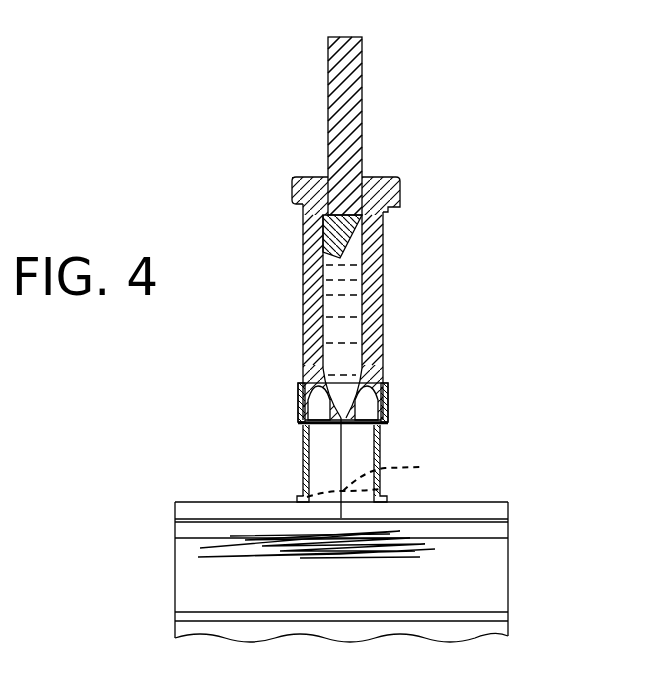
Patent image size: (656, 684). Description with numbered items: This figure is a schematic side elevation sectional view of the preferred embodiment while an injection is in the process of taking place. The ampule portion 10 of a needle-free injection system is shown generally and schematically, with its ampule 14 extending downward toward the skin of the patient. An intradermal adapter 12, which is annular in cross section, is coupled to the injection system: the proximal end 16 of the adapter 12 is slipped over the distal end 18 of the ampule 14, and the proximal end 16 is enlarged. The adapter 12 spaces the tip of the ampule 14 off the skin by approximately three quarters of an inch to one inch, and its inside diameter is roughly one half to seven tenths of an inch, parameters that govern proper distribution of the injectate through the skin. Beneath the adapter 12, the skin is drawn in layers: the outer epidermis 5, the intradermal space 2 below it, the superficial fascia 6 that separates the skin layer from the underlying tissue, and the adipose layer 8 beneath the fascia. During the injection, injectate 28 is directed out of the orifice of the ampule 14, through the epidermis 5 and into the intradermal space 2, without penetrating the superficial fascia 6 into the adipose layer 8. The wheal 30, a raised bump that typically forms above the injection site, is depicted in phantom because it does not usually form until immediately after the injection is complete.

The ampule portion 10 is at (403, 213).
The ampule 14 is at (303, 270).
The distal end of ampule 18 is at (382, 358).
The proximal end of adapter 16 is at (298, 394).
The intradermal adapter 12 is at (383, 460).
The wheal 30 is at (385, 474).
The injectate 28 is at (341, 470).
The epidermis 5 is at (508, 522).
The intradermal space 2 is at (508, 578).
The superficial fascia 6 is at (508, 618).
The adipose layer 8 is at (508, 636).